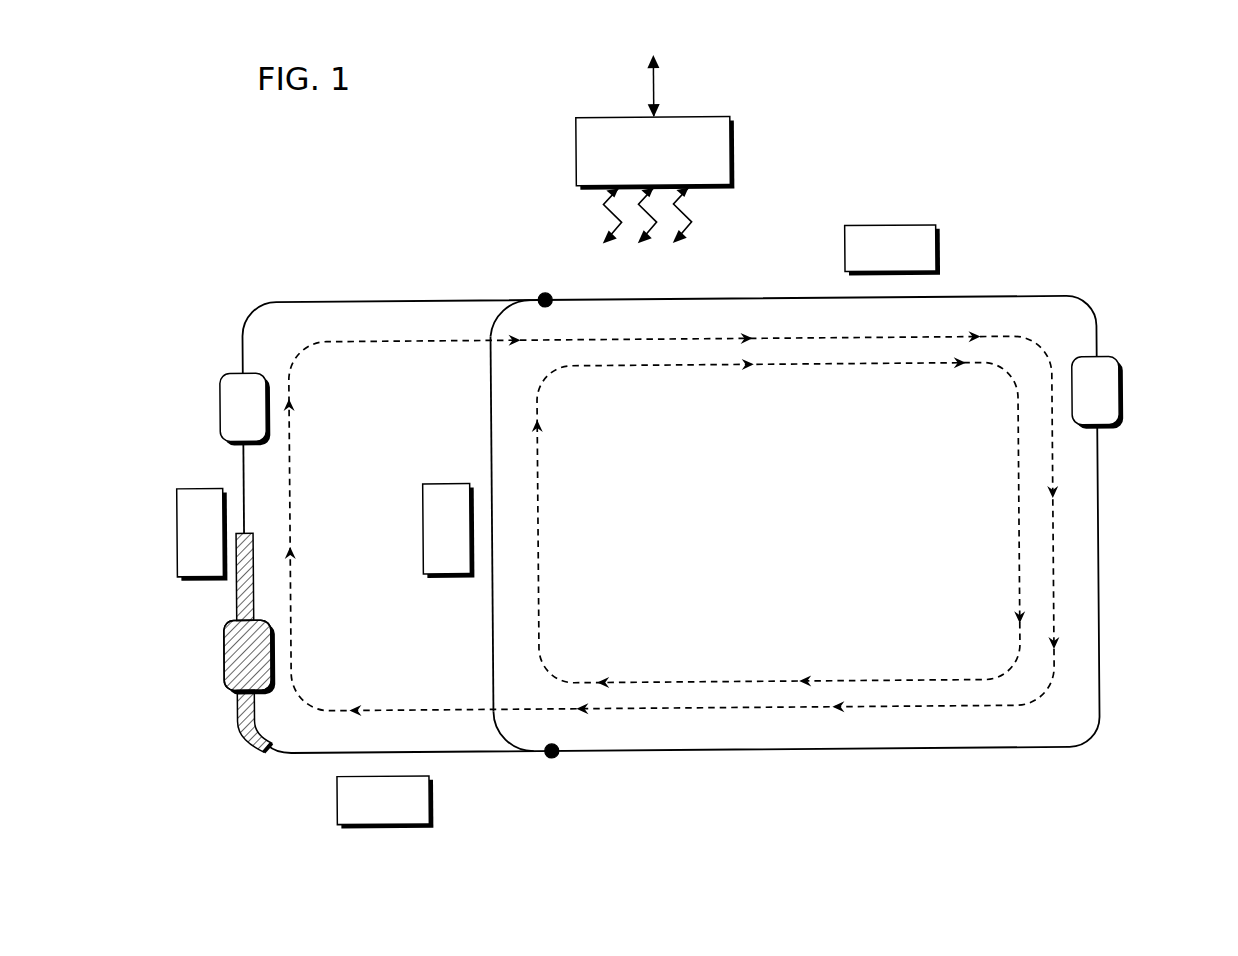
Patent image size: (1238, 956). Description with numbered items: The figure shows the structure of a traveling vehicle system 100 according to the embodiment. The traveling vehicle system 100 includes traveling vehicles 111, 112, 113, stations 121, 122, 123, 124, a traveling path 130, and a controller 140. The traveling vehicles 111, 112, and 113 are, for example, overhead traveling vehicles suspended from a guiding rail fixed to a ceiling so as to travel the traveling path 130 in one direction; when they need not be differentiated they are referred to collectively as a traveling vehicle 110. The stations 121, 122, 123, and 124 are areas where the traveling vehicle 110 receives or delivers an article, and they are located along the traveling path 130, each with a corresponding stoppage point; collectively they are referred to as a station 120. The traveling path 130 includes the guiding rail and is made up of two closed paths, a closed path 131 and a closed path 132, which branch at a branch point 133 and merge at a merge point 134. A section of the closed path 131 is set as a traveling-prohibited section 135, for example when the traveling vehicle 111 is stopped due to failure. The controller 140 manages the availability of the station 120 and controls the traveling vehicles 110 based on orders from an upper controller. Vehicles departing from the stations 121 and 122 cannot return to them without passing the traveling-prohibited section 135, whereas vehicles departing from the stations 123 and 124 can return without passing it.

The traveling vehicle system 100 is at (908, 82).
The traveling vehicle 110 is at (687, 501).
The traveling vehicle 111 is at (223, 640).
The traveling vehicle 112 is at (228, 370).
The traveling vehicle 113 is at (1114, 360).
The station 120 is at (578, 508).
The station 121 is at (335, 790).
The station 122 is at (181, 485).
The station 123 is at (911, 227).
The station 124 is at (446, 482).
The traveling path 130 is at (1000, 298).
The closed path 131 is at (290, 503).
The closed path 132 is at (888, 678).
The branch point 133 is at (548, 757).
The merge point 134 is at (550, 296).
The traveling-prohibited section 135 is at (236, 593).
The controller 140 is at (737, 127).